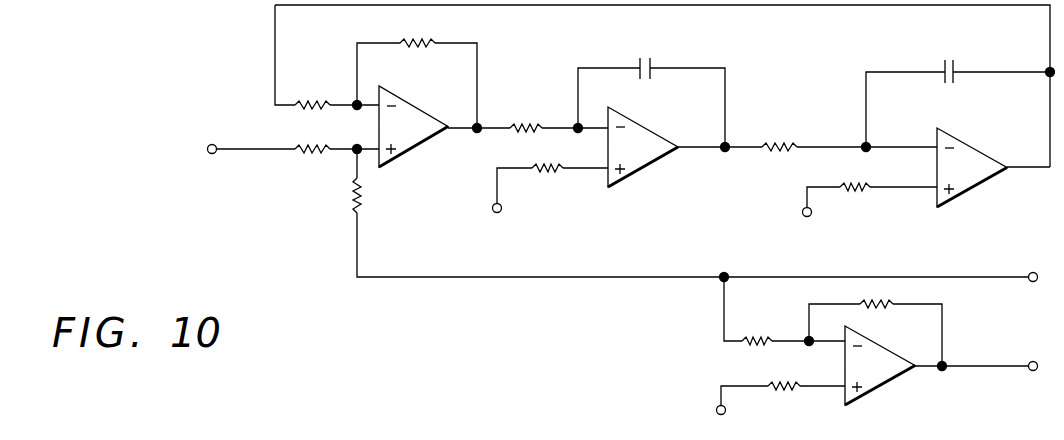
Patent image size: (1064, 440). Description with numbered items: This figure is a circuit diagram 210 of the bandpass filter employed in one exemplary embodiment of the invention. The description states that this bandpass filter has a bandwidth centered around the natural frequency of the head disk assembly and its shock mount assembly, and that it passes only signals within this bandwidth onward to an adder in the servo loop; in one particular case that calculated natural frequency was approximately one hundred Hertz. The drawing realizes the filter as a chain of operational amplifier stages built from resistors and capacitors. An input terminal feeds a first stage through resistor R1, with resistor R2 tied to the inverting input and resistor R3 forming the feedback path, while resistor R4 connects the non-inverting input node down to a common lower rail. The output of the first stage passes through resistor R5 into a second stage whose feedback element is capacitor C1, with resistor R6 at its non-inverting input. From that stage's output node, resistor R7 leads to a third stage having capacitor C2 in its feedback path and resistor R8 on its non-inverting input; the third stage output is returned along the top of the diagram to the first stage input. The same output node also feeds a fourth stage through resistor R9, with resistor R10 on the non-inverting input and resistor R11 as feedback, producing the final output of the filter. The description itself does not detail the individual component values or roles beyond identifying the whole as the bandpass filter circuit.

The circuit diagram 210 is at (631, 212).
The resistor R1 is at (309, 163).
The resistor R2 is at (311, 93).
The resistor R3 is at (416, 31).
The resistor R4 is at (372, 196).
The resistor R5 is at (525, 115).
The resistor R6 is at (546, 185).
The resistor R7 is at (778, 136).
The resistor R8 is at (854, 202).
The resistor R9 is at (756, 329).
The resistor R10 is at (777, 401).
The resistor R11 is at (874, 293).
The capacitor C1 is at (649, 56).
The capacitor C2 is at (954, 60).